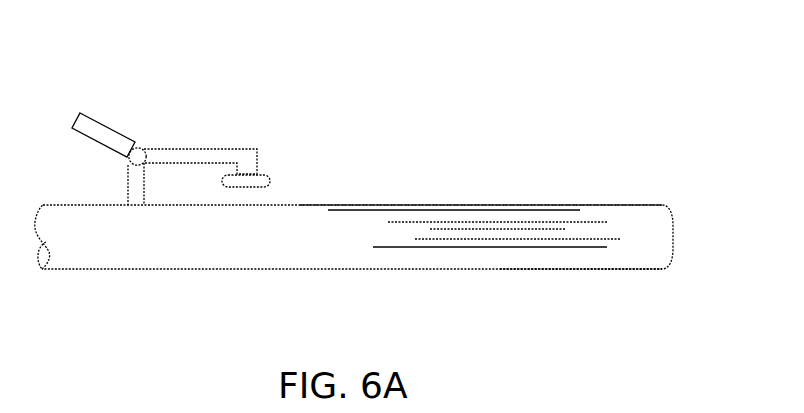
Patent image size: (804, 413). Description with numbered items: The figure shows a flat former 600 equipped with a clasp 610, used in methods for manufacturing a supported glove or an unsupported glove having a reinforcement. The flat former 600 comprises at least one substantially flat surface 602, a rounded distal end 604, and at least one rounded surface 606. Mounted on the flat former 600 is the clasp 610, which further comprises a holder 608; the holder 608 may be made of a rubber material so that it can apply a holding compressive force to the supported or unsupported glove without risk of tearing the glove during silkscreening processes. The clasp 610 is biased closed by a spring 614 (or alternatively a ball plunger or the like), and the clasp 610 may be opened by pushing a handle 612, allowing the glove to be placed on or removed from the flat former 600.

The flat former 600 is at (547, 72).
The substantially flat surface 602 is at (615, 205).
The rounded distal end 604 is at (675, 235).
The rounded surface 606 is at (603, 258).
The holder 608 is at (270, 174).
The clasp 610 is at (198, 148).
The handle 612 is at (102, 123).
The spring 614 is at (128, 163).